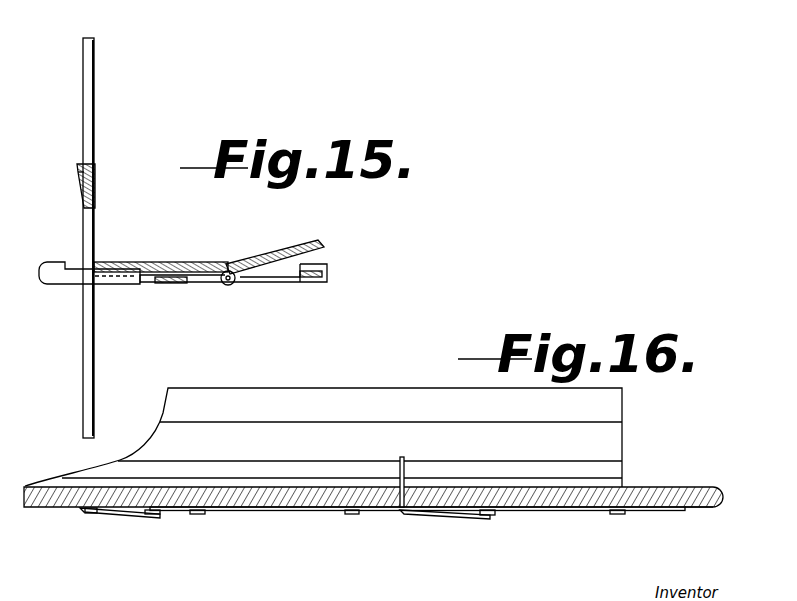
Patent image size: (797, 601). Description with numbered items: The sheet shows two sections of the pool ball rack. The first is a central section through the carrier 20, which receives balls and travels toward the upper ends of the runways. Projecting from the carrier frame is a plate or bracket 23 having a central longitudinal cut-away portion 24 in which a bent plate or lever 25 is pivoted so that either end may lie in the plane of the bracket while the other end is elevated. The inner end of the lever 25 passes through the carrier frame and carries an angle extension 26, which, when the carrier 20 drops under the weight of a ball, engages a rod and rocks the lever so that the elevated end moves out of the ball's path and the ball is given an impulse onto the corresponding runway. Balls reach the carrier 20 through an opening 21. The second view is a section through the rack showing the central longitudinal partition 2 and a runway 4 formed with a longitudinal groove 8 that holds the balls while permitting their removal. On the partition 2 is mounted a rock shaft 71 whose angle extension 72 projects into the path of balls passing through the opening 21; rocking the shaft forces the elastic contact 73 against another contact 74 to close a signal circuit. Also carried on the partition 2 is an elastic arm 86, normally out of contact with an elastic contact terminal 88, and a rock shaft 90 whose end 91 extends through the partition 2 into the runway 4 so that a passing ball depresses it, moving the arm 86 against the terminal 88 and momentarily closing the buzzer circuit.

In FIG. 15, the carrier 20 is at (88, 250).
In FIG. 15, the opening 21 is at (92, 348).
In FIG. 15, the plate or bracket 23 is at (322, 264).
In FIG. 15, the central longitudinal cut-away portion 24 is at (278, 277).
In FIG. 15, the bent plate or lever 25 is at (244, 248).
In FIG. 15, the angle extension 26 is at (53, 275).
In FIG. 16, the central longitudinal partition 2 is at (302, 492).
In FIG. 16, the runway 4 is at (398, 397).
In FIG. 16, the longitudinal groove 8 is at (342, 448).
In FIG. 16, the rock shaft 71 is at (585, 512).
In FIG. 16, the angle extension 72 is at (682, 512).
In FIG. 16, the elastic contact 73 is at (488, 516).
In FIG. 16, the contact 74 is at (478, 518).
In FIG. 16, the elastic arm 86 is at (165, 518).
In FIG. 16, the elastic contact terminal 88 is at (125, 518).
In FIG. 16, the rock shaft 90 is at (245, 512).
In FIG. 16, the end of rock shaft 91 is at (408, 456).